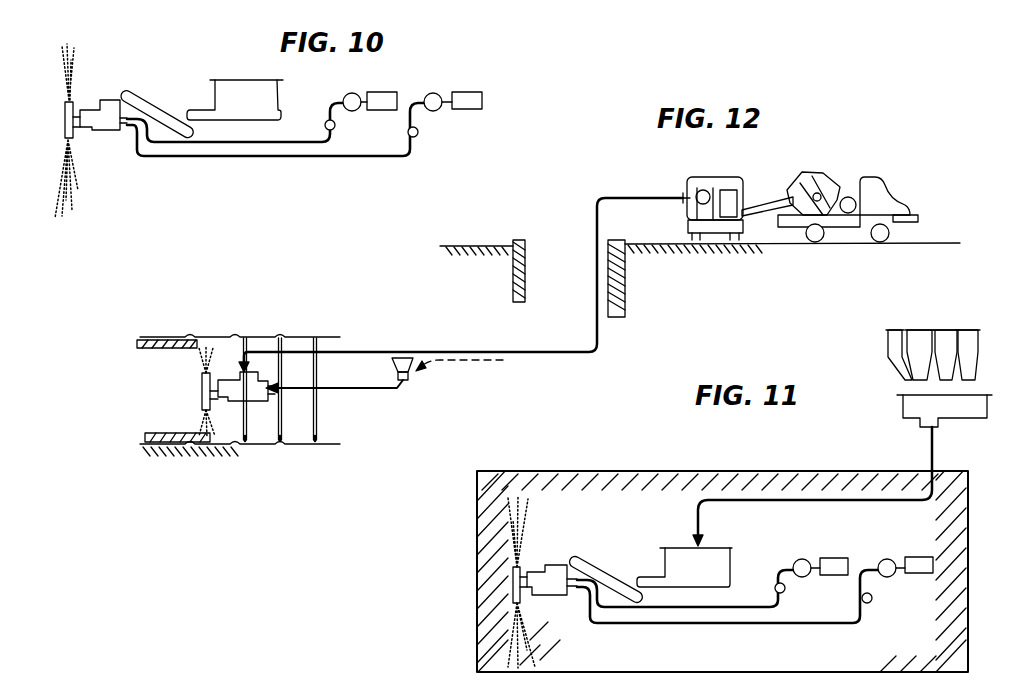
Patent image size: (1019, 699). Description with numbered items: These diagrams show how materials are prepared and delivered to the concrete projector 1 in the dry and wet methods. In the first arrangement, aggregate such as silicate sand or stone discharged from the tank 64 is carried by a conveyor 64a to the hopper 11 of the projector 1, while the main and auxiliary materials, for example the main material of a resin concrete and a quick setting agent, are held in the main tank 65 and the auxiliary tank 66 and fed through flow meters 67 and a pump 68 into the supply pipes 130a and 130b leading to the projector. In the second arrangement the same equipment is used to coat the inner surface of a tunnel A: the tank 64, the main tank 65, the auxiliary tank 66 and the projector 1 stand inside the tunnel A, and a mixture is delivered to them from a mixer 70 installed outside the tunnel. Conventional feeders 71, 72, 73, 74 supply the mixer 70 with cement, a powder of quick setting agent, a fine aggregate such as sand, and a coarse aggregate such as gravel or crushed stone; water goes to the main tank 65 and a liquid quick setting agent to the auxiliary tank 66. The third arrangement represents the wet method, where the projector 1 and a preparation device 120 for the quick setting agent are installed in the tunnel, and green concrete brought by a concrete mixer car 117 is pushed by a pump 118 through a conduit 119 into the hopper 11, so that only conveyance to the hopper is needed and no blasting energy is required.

In FIG. 10, the projector 1 is at (92, 130).
In FIG. 11, the projector 1 is at (545, 597).
In FIG. 12, the projector 1 is at (226, 402).
In FIG. 10, the hopper 11 is at (105, 100).
In FIG. 11, the hopper 11 is at (555, 565).
In FIG. 12, the hopper 11 is at (247, 362).
In FIG. 10, the tank 64 is at (238, 90).
In FIG. 11, the tank 64 is at (670, 548).
In FIG. 10, the conveyor 64a is at (160, 107).
In FIG. 11, the conveyor 64a is at (600, 556).
In FIG. 10, the main tank 65 is at (385, 88).
In FIG. 11, the main tank 65 is at (832, 557).
In FIG. 10, the auxiliary tank 66 is at (484, 100).
In FIG. 11, the auxiliary tank 66 is at (917, 557).
In FIG. 10, the flow meter 67 is at (335, 126).
In FIG. 11, the flow meter 67 is at (786, 590).
In FIG. 10, the pump 68 is at (345, 97).
In FIG. 11, the pump 68 is at (800, 560).
In FIG. 11, the mixer 70 is at (958, 419).
In FIG. 11, the feeder 71 is at (920, 334).
In FIG. 11, the feeder 72 is at (890, 335).
In FIG. 11, the feeder 73 is at (947, 336).
In FIG. 11, the feeder 74 is at (968, 338).
In FIG. 12, the concrete mixer car 117 is at (862, 178).
In FIG. 12, the pump 118 is at (713, 178).
In FIG. 12, the conduit 119 is at (531, 355).
In FIG. 12, the preparation device for a quick setting agent 120 is at (405, 381).
In FIG. 10, the supply pipe 130a is at (238, 146).
In FIG. 11, the supply pipe 130a is at (697, 611).
In FIG. 10, the supply pipe 130b is at (314, 159).
In FIG. 11, the supply pipe 130b is at (787, 626).
In FIG. 11, the tunnel A is at (477, 578).